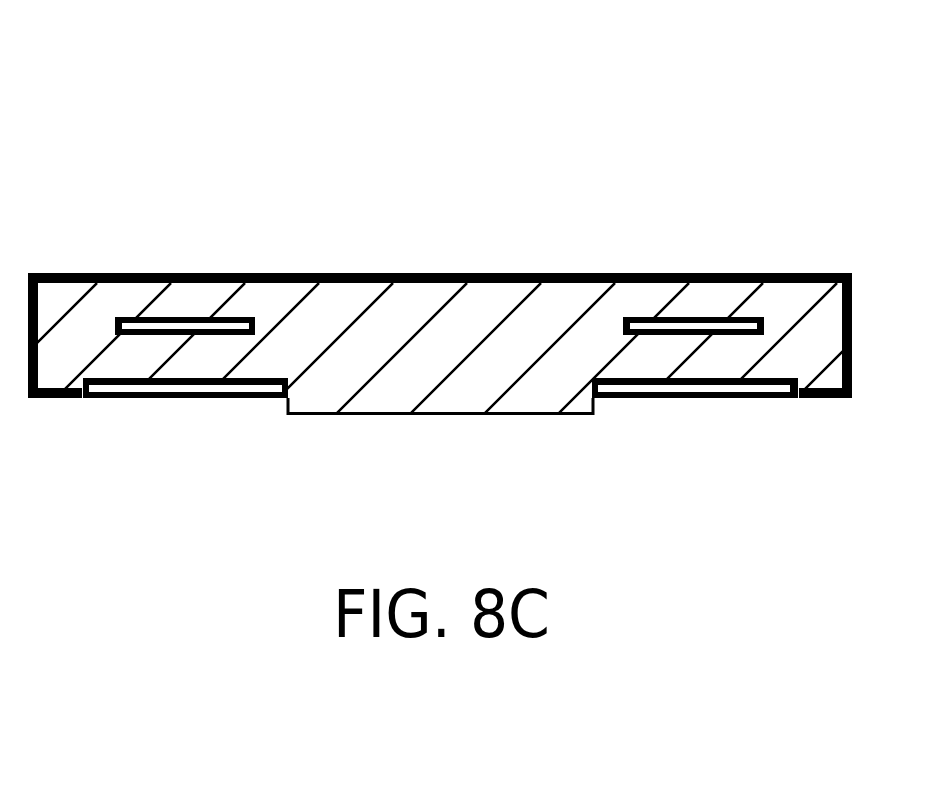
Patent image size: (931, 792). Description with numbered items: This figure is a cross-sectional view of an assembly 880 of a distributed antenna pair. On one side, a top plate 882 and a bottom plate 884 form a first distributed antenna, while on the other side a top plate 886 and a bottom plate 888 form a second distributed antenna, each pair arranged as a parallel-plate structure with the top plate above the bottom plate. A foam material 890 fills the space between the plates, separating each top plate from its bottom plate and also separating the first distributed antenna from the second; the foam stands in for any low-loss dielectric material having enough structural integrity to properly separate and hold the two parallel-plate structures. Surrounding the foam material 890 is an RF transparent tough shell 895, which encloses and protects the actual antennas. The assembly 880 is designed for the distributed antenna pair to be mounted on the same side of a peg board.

The assembly 880 is at (252, 122).
The top plate 882 is at (167, 320).
The bottom plate 884 is at (155, 397).
The top plate 886 is at (675, 317).
The bottom plate 888 is at (668, 397).
The foam material 890 is at (422, 307).
The RF transparent tough shell 895 is at (737, 275).